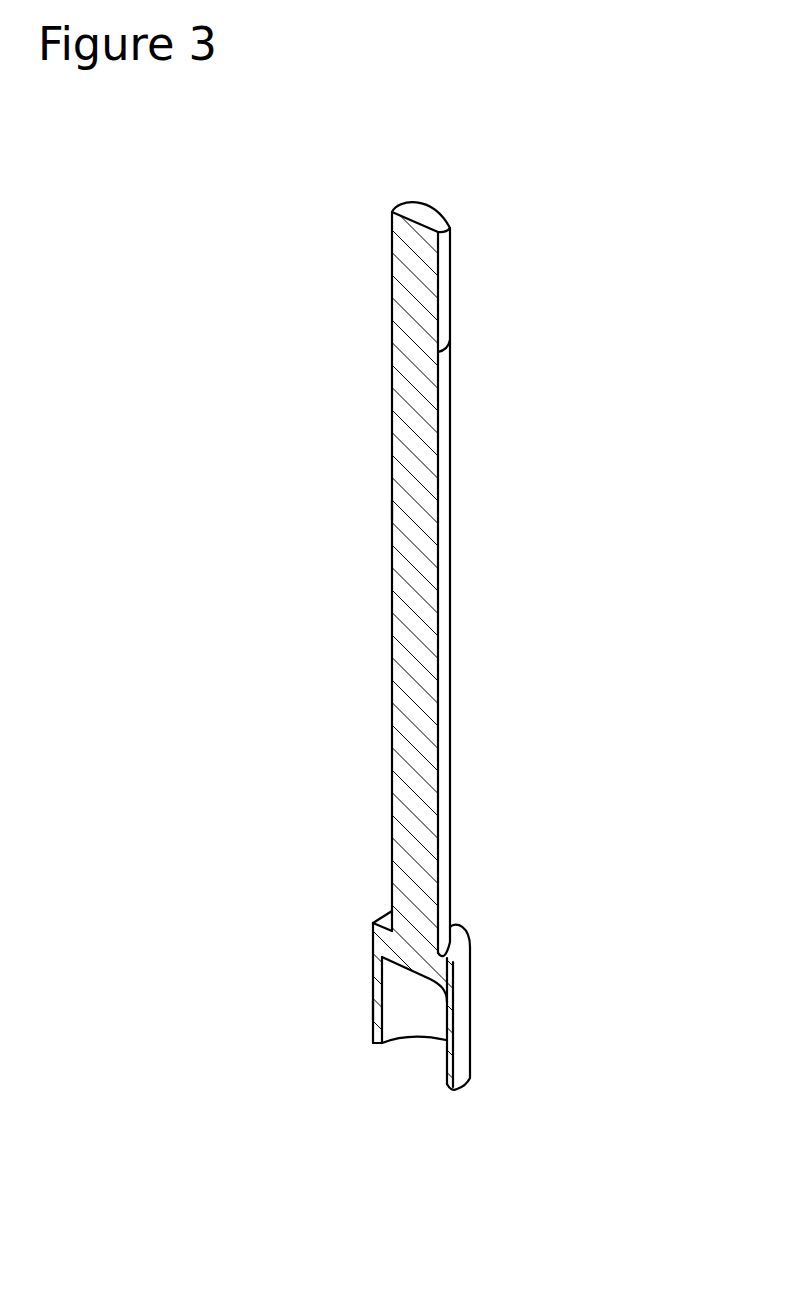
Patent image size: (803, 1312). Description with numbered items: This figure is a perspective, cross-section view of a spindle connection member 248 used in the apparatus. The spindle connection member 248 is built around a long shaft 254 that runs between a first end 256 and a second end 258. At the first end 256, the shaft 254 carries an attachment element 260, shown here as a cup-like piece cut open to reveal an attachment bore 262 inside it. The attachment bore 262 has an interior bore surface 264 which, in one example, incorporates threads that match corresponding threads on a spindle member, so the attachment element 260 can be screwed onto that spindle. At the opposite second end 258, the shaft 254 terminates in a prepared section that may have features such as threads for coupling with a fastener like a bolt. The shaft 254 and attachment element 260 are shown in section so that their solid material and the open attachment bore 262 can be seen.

The spindle connection member 248 is at (507, 433).
The shaft 254 is at (333, 215).
The first end 256 is at (330, 947).
The second end 258 is at (462, 223).
The attachment element 260 is at (512, 997).
The attachment bore 262 is at (423, 1062).
The interior bore surface 264 is at (402, 1013).